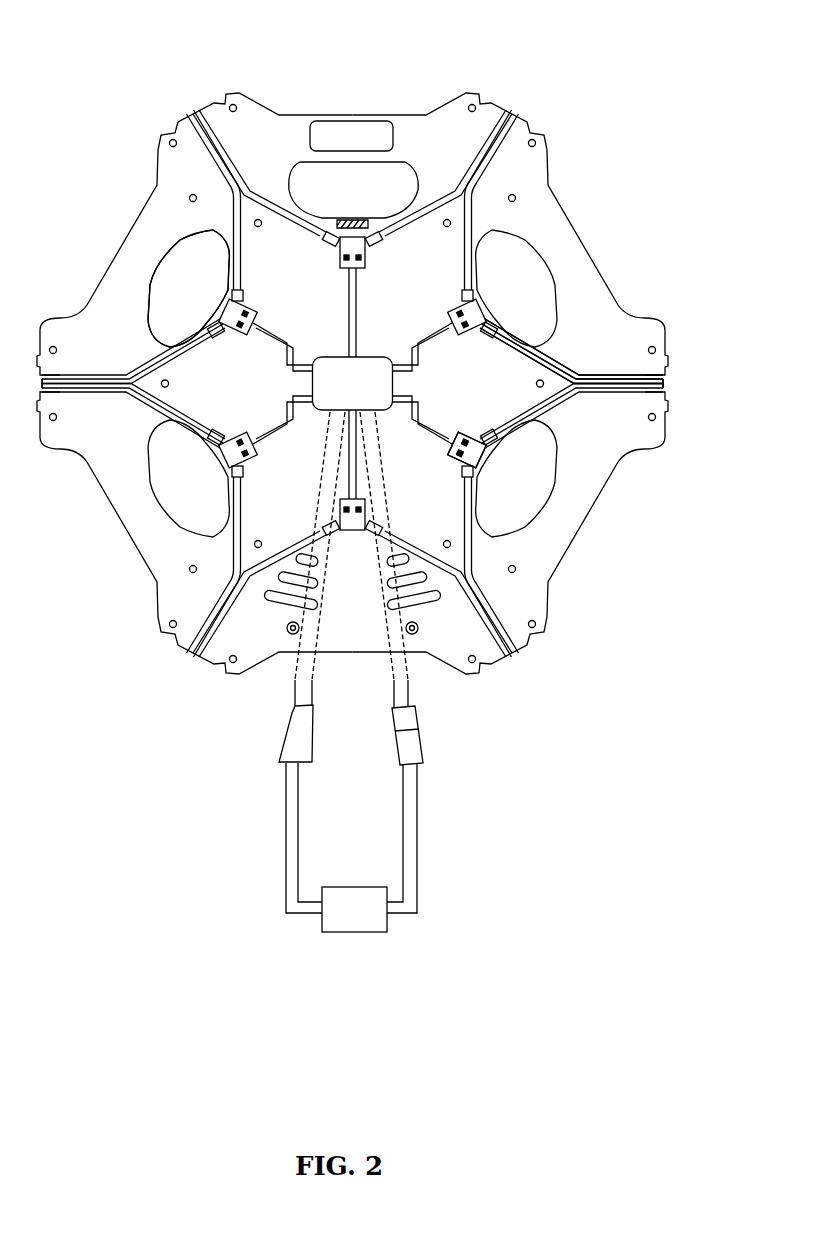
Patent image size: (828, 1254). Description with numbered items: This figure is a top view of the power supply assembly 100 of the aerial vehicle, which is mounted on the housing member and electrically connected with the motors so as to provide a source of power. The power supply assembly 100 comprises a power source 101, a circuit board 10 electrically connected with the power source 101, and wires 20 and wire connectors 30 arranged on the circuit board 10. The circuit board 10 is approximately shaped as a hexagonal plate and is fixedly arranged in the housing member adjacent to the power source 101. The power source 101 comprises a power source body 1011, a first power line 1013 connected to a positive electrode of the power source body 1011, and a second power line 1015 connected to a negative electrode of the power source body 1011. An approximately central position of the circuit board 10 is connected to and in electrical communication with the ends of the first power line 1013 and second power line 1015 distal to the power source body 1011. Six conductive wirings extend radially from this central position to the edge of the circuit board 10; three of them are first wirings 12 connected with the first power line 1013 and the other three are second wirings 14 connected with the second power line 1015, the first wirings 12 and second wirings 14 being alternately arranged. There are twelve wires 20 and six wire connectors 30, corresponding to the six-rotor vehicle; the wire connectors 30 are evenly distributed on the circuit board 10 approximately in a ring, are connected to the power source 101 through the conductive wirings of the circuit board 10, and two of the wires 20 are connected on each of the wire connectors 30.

The power supply assembly 100 is at (285, 33).
The circuit board 10 is at (548, 227).
The first wirings 12 is at (347, 293).
The second wirings 14 is at (175, 358).
The wires 20 is at (550, 360).
The wire connectors 30 is at (483, 460).
The power source 101 is at (377, 742).
The power source body 1011 is at (356, 950).
The first power line 1013 is at (306, 908).
The second power line 1015 is at (411, 878).